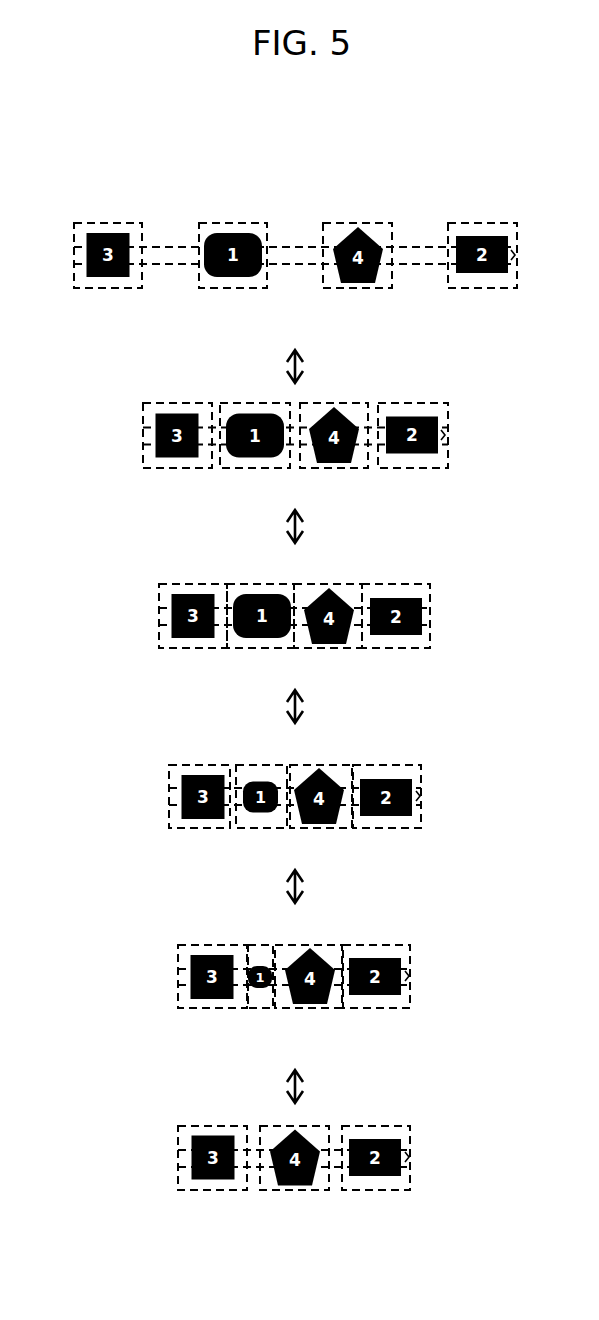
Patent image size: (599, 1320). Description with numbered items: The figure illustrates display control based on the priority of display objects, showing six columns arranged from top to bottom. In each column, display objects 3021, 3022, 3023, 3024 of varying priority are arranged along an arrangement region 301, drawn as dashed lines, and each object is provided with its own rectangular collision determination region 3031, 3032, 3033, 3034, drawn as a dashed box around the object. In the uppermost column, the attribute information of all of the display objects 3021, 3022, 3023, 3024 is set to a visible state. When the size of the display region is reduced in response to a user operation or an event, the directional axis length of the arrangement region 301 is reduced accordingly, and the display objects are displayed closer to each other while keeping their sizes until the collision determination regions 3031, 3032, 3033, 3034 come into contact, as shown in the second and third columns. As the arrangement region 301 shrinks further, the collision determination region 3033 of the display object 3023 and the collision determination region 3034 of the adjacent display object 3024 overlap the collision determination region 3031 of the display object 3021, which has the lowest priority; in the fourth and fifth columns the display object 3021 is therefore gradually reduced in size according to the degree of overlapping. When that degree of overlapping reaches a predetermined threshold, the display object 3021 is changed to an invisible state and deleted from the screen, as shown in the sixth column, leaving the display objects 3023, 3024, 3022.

The arrangement region 301 is at (397, 246).
The display object 3021 is at (258, 966).
The display object 3022 is at (502, 236).
The display object 3023 is at (116, 233).
The display object 3024 is at (358, 227).
The collision determination region 3031 is at (272, 1028).
The collision determination region 3032 is at (450, 287).
The collision determination region 3033 is at (202, 1028).
The collision determination region 3034 is at (340, 1030).